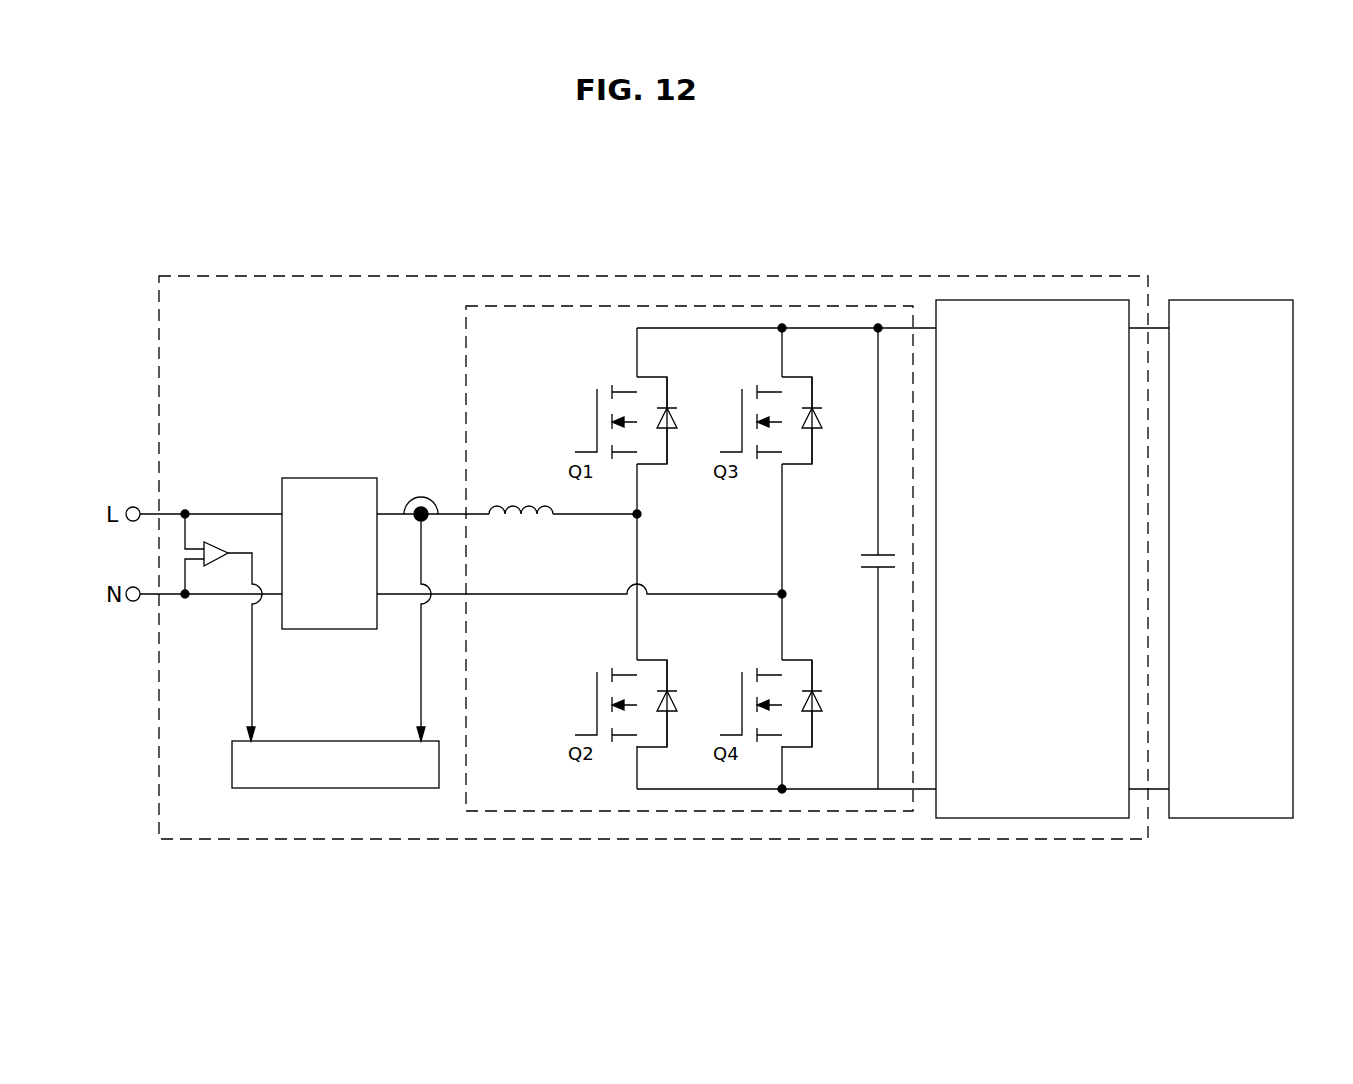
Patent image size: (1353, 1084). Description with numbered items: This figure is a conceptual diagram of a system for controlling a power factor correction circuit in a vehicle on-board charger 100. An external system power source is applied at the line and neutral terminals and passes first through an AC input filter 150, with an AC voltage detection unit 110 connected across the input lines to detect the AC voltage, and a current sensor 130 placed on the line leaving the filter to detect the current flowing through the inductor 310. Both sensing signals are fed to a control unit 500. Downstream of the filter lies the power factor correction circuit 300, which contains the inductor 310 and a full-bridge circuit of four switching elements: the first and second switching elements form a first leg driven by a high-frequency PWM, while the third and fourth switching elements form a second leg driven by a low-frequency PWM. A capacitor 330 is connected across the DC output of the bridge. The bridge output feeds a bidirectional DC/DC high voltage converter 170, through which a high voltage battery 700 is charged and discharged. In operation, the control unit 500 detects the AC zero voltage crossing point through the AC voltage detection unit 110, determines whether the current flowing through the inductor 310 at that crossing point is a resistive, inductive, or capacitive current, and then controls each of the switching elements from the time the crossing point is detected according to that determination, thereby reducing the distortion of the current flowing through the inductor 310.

The on-board charger 100 is at (757, 840).
The PFC 300 is at (551, 812).
The AC input filter 150 is at (336, 478).
The current sensor 130 is at (418, 497).
The AC voltage detection unit 110 is at (213, 563).
The inductor 310 is at (512, 500).
The DC link capacitor 330 is at (872, 551).
The control unit 500 is at (371, 789).
The bidirectional DC/DC high voltage converter 170 is at (992, 819).
The high voltage battery 700 is at (1232, 819).